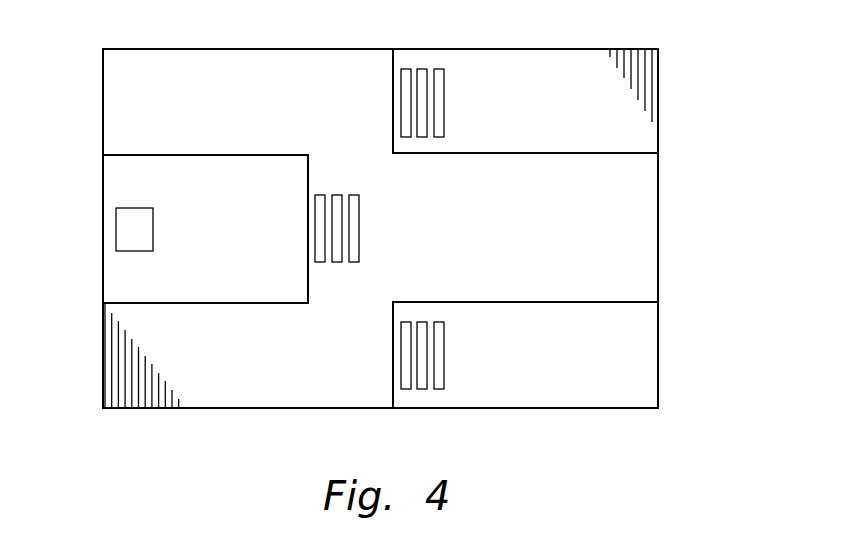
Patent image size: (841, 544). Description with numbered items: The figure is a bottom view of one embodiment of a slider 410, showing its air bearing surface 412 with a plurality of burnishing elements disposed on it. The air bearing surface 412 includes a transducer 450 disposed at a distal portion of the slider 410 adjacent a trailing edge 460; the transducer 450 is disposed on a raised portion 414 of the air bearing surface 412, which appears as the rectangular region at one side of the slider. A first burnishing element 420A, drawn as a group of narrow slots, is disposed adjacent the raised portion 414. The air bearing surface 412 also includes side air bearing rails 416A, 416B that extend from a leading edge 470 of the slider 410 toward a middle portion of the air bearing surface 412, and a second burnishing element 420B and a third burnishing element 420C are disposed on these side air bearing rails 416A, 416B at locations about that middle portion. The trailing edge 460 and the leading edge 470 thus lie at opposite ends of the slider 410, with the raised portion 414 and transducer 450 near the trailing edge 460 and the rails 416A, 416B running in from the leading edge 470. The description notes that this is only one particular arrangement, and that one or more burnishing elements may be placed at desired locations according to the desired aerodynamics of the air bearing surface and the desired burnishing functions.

The slider 410 is at (692, 92).
The air bearing surface 412 is at (181, 59).
The raised portion 414 is at (243, 162).
The side air bearing rail 416A is at (577, 146).
The side air bearing rail 416B is at (580, 310).
The first burnishing element 420A is at (377, 228).
The second burnishing element 420B is at (465, 102).
The third burnishing element 420C is at (467, 364).
The transducer 450 is at (153, 229).
The trailing edge 460 is at (103, 104).
The leading edge 470 is at (659, 228).